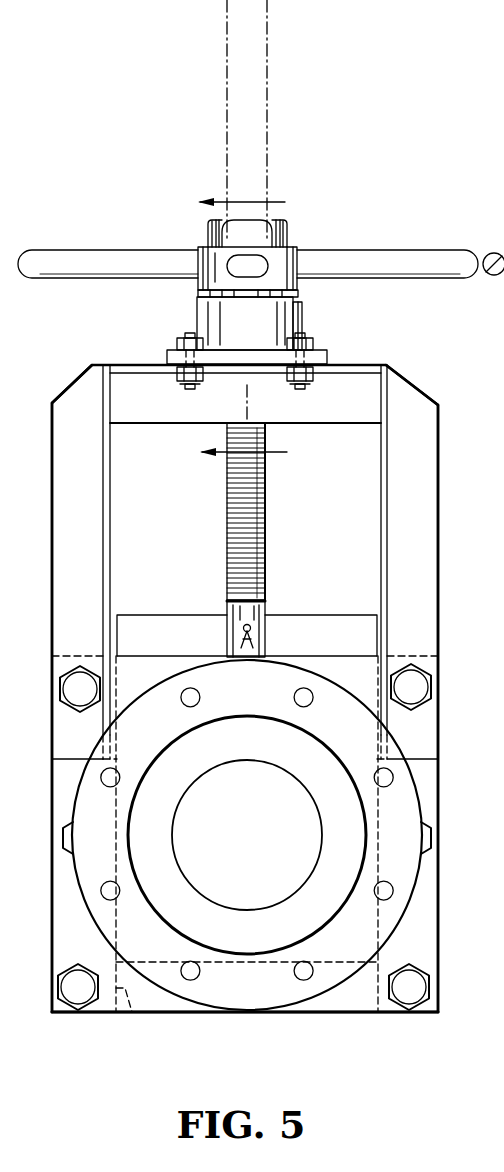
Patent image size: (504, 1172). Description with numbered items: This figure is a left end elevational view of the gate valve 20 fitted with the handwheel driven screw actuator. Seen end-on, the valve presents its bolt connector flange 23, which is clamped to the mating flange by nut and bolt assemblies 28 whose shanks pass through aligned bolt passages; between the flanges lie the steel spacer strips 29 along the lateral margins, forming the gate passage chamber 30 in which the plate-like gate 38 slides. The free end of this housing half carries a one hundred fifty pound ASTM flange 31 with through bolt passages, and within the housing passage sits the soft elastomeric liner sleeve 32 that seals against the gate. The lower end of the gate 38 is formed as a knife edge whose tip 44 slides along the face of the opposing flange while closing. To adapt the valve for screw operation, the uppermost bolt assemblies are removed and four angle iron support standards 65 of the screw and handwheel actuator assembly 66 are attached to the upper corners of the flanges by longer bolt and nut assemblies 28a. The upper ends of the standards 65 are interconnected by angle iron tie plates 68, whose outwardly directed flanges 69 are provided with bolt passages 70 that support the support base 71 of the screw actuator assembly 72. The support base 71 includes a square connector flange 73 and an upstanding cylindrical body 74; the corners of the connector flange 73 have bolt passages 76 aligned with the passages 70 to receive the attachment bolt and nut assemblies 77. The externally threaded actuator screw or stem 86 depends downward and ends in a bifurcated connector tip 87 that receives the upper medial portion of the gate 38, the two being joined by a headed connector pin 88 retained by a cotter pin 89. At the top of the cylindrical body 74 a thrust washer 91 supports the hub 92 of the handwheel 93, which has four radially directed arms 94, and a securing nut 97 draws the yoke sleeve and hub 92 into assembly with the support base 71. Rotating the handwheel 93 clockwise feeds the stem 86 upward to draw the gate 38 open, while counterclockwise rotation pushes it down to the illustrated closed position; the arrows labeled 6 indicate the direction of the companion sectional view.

The section line 6 is at (249, 326).
The gate valve 20 is at (178, 1016).
The bolt connector flange 23 is at (432, 900).
The nut and bolt assemblies 28 is at (62, 833).
The longer bolt and nut assemblies 28a is at (80, 666).
The steel spacer strips 29 is at (105, 1006).
The gate passage chamber 30 is at (125, 988).
The ASTM flange 31 is at (316, 988).
The liner sleeve 32 is at (180, 904).
The plate-like gate 38 is at (345, 618).
The knife edge tip 44 is at (260, 964).
The angle iron support standards 65 is at (62, 505).
The screw and handwheel actuator assembly 66 is at (378, 358).
The angle iron tie plates 68 is at (172, 415).
The outwardly directed flanges 69 is at (125, 364).
The bolt passages 70 is at (185, 384).
The support base 71 is at (338, 348).
The screw actuator assembly 72 is at (190, 238).
The square connector flange 73 is at (240, 349).
The upstanding cylindrical body 74 is at (300, 313).
The bolt passages 76 is at (197, 368).
The attachment bolt and nut assemblies 77 is at (180, 343).
The actuator screw or stem 86 is at (263, 110).
The bifurcated connector tip 87 is at (268, 607).
The headed connector pin 88 is at (241, 637).
The cotter pin 89 is at (244, 625).
The thrust washer 91 is at (297, 296).
The hub 92 is at (215, 265).
The handwheel 93 is at (304, 236).
The radially directed arms 94 is at (78, 250).
The securing nut 97 is at (294, 222).